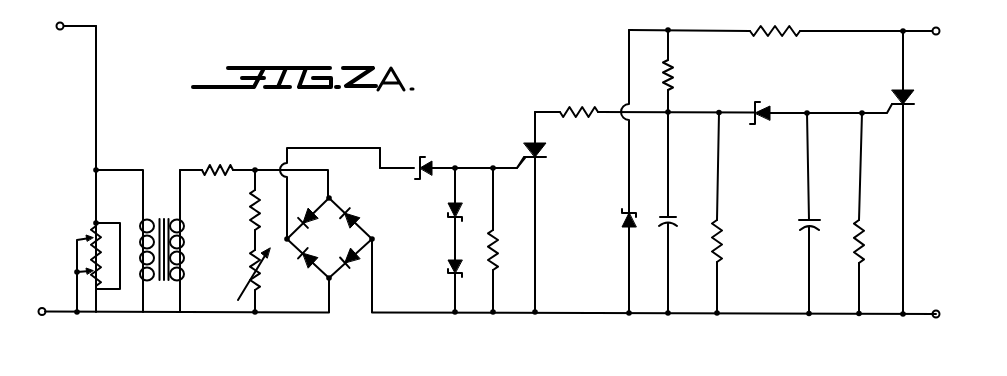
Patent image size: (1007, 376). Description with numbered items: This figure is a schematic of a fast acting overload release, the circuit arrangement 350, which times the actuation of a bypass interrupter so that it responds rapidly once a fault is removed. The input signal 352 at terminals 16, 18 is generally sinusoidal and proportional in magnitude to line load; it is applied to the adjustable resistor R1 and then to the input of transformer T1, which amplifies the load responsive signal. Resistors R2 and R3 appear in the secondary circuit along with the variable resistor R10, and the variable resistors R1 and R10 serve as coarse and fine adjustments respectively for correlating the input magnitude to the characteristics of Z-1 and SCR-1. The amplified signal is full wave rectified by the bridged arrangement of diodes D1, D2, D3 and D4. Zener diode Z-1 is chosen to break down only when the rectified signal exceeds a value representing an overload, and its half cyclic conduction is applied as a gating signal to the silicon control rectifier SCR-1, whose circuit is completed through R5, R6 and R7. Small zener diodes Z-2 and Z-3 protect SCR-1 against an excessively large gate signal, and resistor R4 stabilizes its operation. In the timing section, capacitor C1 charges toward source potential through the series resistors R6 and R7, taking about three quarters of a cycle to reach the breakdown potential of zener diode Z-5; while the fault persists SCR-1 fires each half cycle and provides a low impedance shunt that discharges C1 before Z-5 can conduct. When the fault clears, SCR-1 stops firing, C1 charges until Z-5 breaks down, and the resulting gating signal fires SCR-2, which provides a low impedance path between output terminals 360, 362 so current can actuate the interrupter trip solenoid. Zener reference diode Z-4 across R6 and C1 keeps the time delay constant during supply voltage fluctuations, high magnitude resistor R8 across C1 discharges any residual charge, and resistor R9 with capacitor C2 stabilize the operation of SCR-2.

The input terminal 16 is at (56, 27).
The input terminal 18 is at (38, 312).
The input signal 352 is at (96, 133).
The circuit arrangement 350 is at (468, 138).
The output terminal 360 is at (941, 32).
The output terminal 362 is at (954, 322).
The adjustable resistor R1 is at (97, 267).
The resistor R2 is at (254, 171).
The resistor R3 is at (239, 210).
The resistor R4 is at (504, 241).
The resistor R5 is at (645, 103).
The resistor R6 is at (679, 71).
The resistor R7 is at (826, 22).
The high magnitude resistor R8 is at (729, 214).
The resistor R9 is at (870, 214).
The variable resistor R10 is at (241, 281).
The transformer T1 is at (162, 241).
The diode D1 is at (307, 209).
The diode D2 is at (303, 268).
The diode D3 is at (360, 215).
The diode D4 is at (351, 269).
The zener diode Z-1 is at (470, 160).
The small zener diode Z-2 is at (438, 214).
The small zener diode Z-3 is at (440, 287).
The zener reference diode Z-4 is at (609, 262).
The zener diode Z-5 is at (821, 106).
The silicon control rectifier SCR-1 is at (547, 153).
The silicon control rectifier SCR-2 is at (920, 95).
The capacitor C1 is at (678, 214).
The capacitor C2 is at (797, 214).